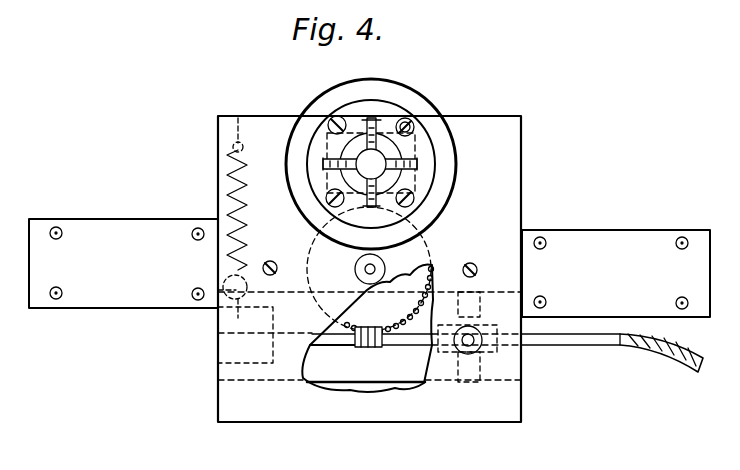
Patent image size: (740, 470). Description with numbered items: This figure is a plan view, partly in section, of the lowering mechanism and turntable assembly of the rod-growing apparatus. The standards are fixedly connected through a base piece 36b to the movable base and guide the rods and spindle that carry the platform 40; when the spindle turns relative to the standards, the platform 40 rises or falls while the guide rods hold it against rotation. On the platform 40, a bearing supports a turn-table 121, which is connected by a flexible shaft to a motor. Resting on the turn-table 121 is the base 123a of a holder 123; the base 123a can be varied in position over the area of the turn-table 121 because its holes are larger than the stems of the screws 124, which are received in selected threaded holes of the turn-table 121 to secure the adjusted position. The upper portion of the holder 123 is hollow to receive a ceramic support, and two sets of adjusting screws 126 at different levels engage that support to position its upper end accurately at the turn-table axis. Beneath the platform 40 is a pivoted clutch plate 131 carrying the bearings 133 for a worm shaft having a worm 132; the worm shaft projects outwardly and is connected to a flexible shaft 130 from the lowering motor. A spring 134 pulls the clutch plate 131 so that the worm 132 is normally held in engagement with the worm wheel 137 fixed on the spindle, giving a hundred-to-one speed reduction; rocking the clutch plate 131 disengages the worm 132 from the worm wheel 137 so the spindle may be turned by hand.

The platform 40 is at (512, 142).
The base piece 36b is at (97, 232).
The turn-table 121 is at (408, 86).
The holder 123 is at (386, 133).
The base 123a is at (348, 140).
The screws 124 is at (413, 128).
The adjusting screws 126 is at (371, 117).
The flexible shaft 130 is at (675, 353).
The clutch plate 131 is at (400, 368).
The worm 132 is at (366, 363).
The bearings 133 is at (227, 350).
The spring 134 is at (227, 170).
The worm wheel 137 is at (367, 328).